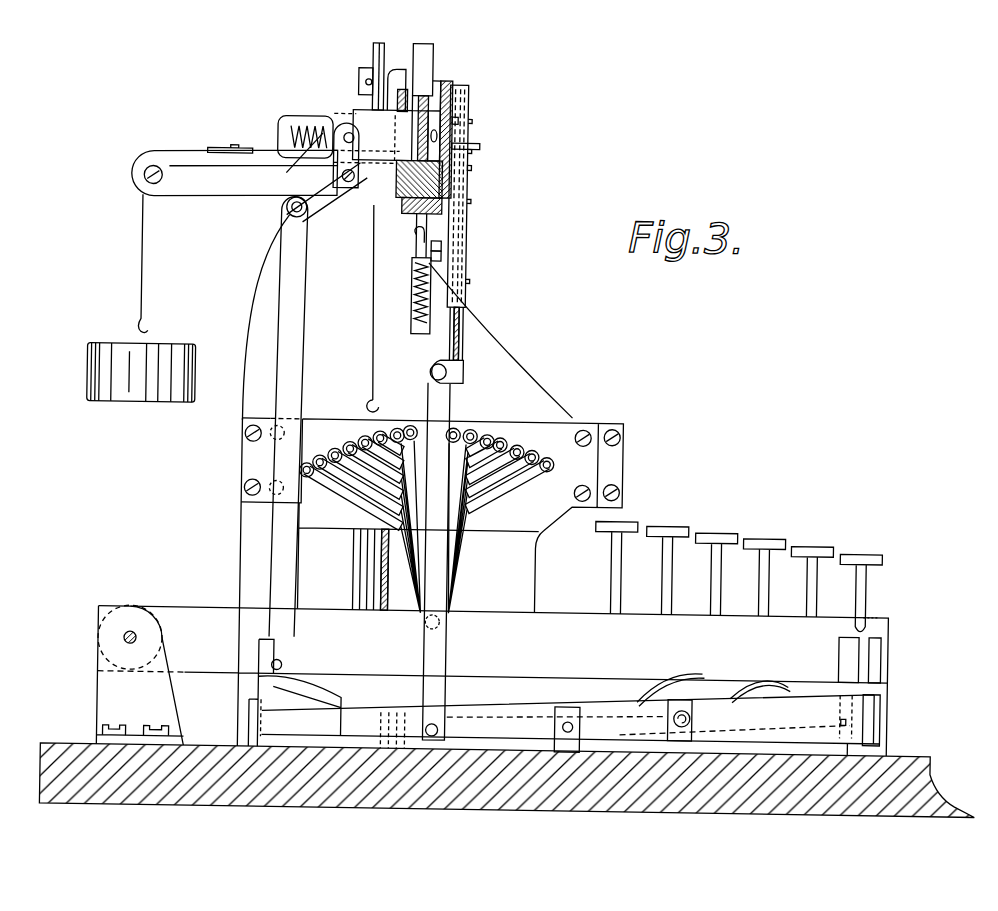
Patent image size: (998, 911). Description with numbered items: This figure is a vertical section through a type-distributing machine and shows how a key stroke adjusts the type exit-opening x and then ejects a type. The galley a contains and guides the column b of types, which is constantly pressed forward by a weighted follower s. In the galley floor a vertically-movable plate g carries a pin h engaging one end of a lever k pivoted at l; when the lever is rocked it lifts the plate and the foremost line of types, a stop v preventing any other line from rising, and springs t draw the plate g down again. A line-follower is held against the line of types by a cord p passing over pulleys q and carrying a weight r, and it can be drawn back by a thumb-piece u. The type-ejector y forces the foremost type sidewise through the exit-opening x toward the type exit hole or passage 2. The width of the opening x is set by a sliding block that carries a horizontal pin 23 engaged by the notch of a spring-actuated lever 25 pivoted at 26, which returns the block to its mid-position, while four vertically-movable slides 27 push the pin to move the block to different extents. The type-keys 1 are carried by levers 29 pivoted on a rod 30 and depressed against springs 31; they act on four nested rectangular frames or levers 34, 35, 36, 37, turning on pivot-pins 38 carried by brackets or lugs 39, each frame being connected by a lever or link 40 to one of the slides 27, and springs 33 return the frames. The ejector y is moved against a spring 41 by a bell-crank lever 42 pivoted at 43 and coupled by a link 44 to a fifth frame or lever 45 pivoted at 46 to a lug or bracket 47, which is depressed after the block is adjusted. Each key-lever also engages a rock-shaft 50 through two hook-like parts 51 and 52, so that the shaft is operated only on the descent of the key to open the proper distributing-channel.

The type-keys 1 is at (730, 519).
The type exit hole or passage 2 is at (428, 170).
The horizontal pin 23 is at (470, 150).
The spring-actuated lever 25 is at (448, 131).
The pivot 26 is at (453, 123).
The vertically-movable slides 27 is at (462, 331).
The levers 29 is at (493, 586).
The rod 30 is at (127, 644).
The springs 31 is at (747, 690).
The springs 33 is at (362, 690).
The frame or lever 34 is at (847, 714).
The frame or lever 35 is at (854, 740).
The frame or lever 36 is at (871, 694).
The frame or lever 37 is at (571, 714).
The pivot-pins 38 is at (688, 704).
The brackets or lugs 39 is at (694, 715).
The lever or link 40 is at (439, 571).
The spring 41 is at (296, 128).
The bell-crank lever 42 is at (316, 210).
The pivot 43 is at (360, 190).
The link 44 is at (300, 329).
The frame or lever 45 is at (500, 720).
The pivot 46 is at (577, 724).
The lug or bracket 47 is at (567, 710).
The rock-shaft 50 is at (357, 440).
The hook-like part 51 is at (449, 530).
The hook-like part 52 is at (358, 489).
The galley a is at (234, 172).
The column of types b is at (298, 162).
The vertically-movable plate g is at (412, 244).
The pin h is at (438, 245).
The lever k is at (438, 258).
The pivot l is at (450, 218).
The cord p is at (370, 291).
The pulleys q is at (366, 51).
The weight r is at (372, 564).
The weighted follower s is at (241, 152).
The springs t is at (409, 300).
The thumb-piece u is at (418, 55).
The stop v is at (385, 72).
The type exit-opening x is at (455, 166).
The type-ejector y is at (464, 96).